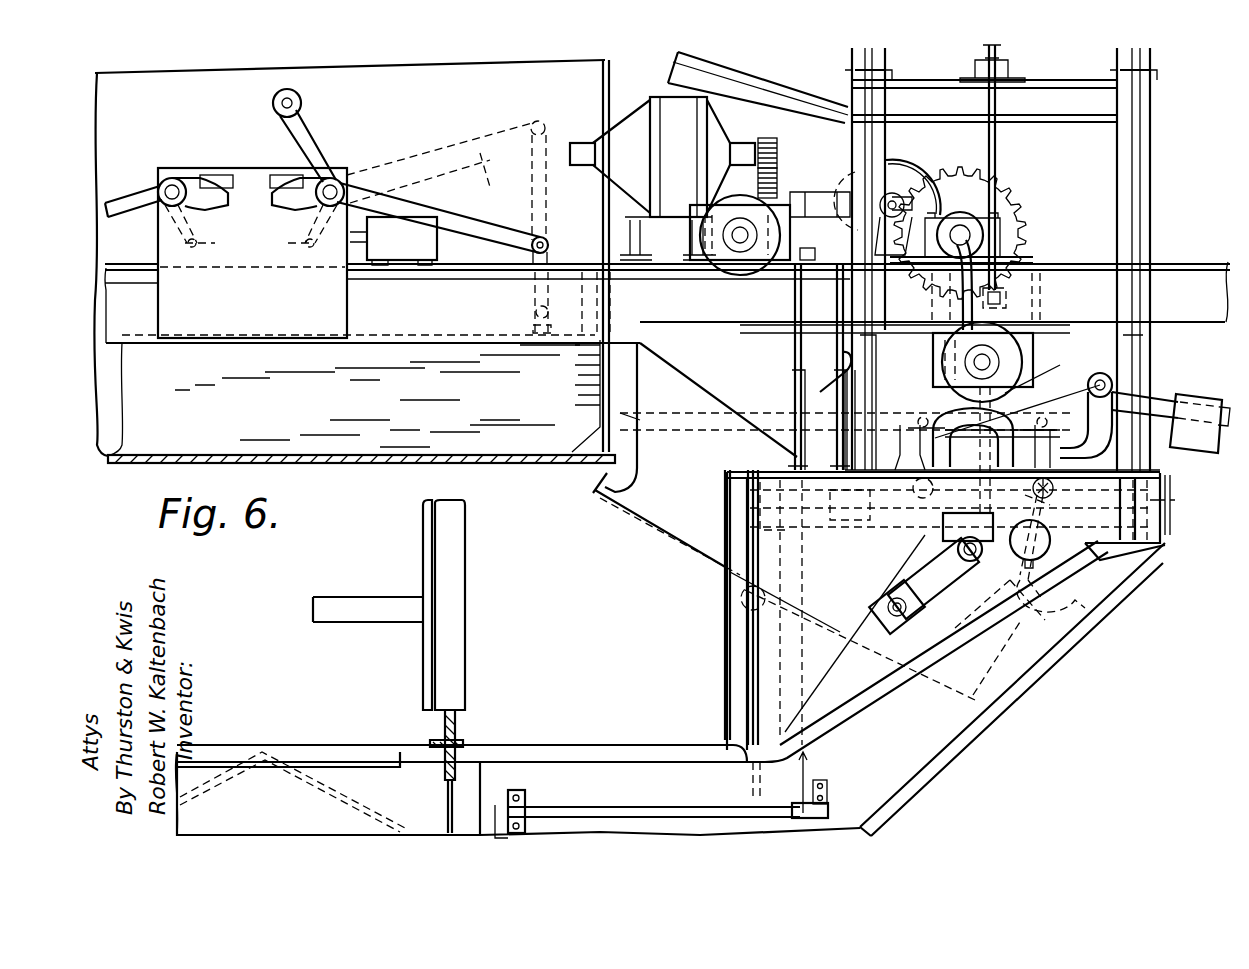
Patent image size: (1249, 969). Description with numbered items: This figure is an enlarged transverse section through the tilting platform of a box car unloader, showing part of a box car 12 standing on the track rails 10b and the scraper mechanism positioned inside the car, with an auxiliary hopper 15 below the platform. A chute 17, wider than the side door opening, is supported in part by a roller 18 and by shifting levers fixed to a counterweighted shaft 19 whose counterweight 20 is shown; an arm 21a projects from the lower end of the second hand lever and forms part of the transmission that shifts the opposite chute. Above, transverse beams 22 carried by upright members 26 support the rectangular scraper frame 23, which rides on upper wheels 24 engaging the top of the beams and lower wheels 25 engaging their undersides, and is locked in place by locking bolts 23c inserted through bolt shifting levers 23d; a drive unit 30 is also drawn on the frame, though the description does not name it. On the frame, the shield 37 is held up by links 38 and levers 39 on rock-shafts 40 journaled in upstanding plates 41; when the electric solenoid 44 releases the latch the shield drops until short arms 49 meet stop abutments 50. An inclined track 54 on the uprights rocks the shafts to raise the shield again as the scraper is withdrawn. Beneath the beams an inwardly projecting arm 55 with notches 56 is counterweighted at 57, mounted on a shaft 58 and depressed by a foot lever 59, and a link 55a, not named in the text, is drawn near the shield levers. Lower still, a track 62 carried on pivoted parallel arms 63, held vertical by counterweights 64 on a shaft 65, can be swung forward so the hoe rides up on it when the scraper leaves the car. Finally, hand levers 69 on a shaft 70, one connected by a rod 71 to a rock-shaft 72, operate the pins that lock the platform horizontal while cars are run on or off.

The track rails 10b is at (455, 728).
The box car 12 is at (603, 78).
The auxiliary hopper 15 is at (352, 800).
The chute 17 is at (680, 543).
The roller 18 is at (742, 606).
The shaft 19 is at (970, 565).
The counterweight 20 is at (1080, 638).
The arm 21a is at (975, 285).
The beams 22 is at (934, 279).
The scraper frame 23 is at (490, 325).
The locking bolts 23c is at (1005, 298).
The bolt shifting levers 23d is at (969, 172).
The upper wheels 24 is at (770, 233).
The lower wheels 25 is at (1020, 360).
The upright members 26 is at (885, 146).
The motor 30 is at (673, 178).
The shield 37 is at (517, 468).
The links 38 is at (548, 245).
The levers 39 is at (158, 192).
The rock-shafts 40 is at (172, 178).
The upstanding plates 41 is at (248, 168).
The electric solenoid 44 is at (393, 241).
The short arms 49 is at (208, 202).
The stop abutments 50 is at (282, 176).
The inclined tracks 54 is at (758, 87).
The inwardly projecting arms 55 is at (292, 96).
The link arm 55a is at (318, 136).
The notches 56 is at (840, 372).
The counterweight 57 is at (1171, 422).
The shaft 58 is at (1110, 385).
The foot lever 59 is at (912, 440).
The tracks 62 is at (760, 413).
The parallel arms 63 is at (918, 470).
The counterweights 64 is at (1048, 545).
The shaft 65 is at (1050, 505).
The hand levers 69 is at (840, 312).
The shaft 70 is at (853, 505).
The rod 71 is at (804, 668).
The rock-shaft 72 is at (641, 808).